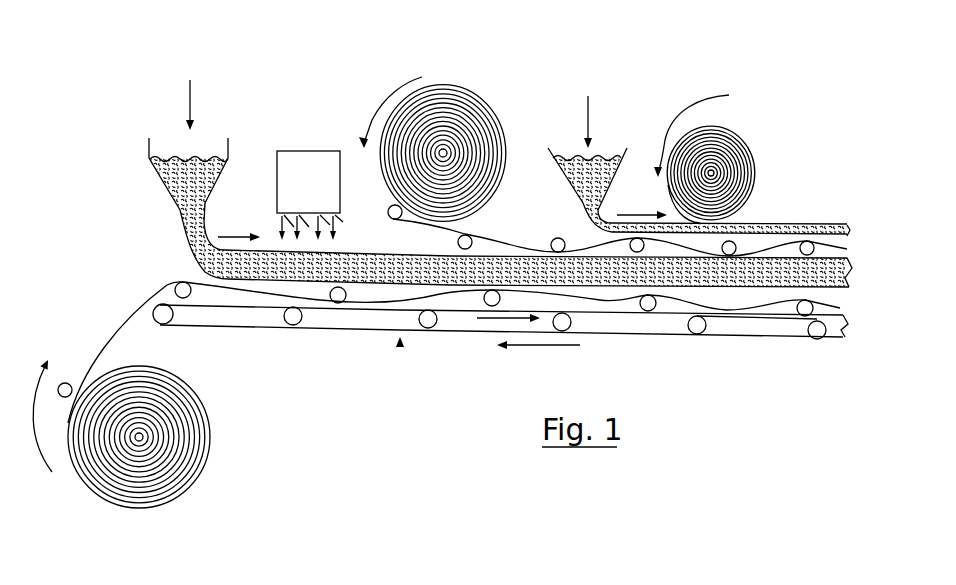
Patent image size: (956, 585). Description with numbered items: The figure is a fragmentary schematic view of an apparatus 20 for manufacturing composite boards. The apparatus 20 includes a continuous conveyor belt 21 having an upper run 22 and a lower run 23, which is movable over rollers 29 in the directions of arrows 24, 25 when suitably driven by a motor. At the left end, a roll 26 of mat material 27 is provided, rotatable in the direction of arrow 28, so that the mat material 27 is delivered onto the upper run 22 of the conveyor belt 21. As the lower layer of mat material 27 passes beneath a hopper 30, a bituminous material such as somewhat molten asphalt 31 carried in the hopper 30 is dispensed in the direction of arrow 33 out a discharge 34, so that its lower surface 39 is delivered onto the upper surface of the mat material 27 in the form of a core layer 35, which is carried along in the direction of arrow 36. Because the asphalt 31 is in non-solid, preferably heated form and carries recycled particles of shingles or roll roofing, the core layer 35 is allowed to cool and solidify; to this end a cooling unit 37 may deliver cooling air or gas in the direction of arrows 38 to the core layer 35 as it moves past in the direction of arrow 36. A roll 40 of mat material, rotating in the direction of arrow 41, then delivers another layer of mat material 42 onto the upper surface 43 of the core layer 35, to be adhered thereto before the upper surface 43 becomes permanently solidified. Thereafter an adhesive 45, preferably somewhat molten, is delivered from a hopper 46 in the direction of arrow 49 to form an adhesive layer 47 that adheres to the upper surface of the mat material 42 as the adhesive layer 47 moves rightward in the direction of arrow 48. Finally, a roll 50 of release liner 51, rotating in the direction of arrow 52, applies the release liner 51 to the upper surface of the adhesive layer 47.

The apparatus 20 is at (400, 345).
The continuous conveyor belt 21 is at (338, 327).
The upper run 22 is at (758, 320).
The lower run 23 is at (723, 327).
The arrow 24 is at (548, 295).
The arrow 25 is at (513, 350).
The roll 26 is at (211, 440).
The mat material 27 is at (120, 317).
The arrow 28 is at (38, 455).
The rollers 29 is at (173, 313).
The hopper 30 is at (148, 160).
The asphalt 31 is at (200, 155).
The arrow 33 is at (190, 98).
The discharge 34 is at (178, 225).
The core layer 35 is at (449, 282).
The arrow 36 is at (236, 237).
The cooling unit 37 is at (303, 170).
The arrows 38 is at (330, 216).
The lower surface 39 is at (372, 283).
The roll 40 is at (458, 86).
The arrow 41 is at (400, 75).
The mat material 42 is at (463, 229).
The upper surface 43 is at (490, 253).
The adhesive 45 is at (598, 152).
The hopper 46 is at (562, 172).
The adhesive layer 47 is at (600, 212).
The arrow 48 is at (649, 209).
The arrow 49 is at (590, 107).
The roll 50 is at (756, 157).
The release liner 51 is at (773, 223).
The arrow 52 is at (704, 130).